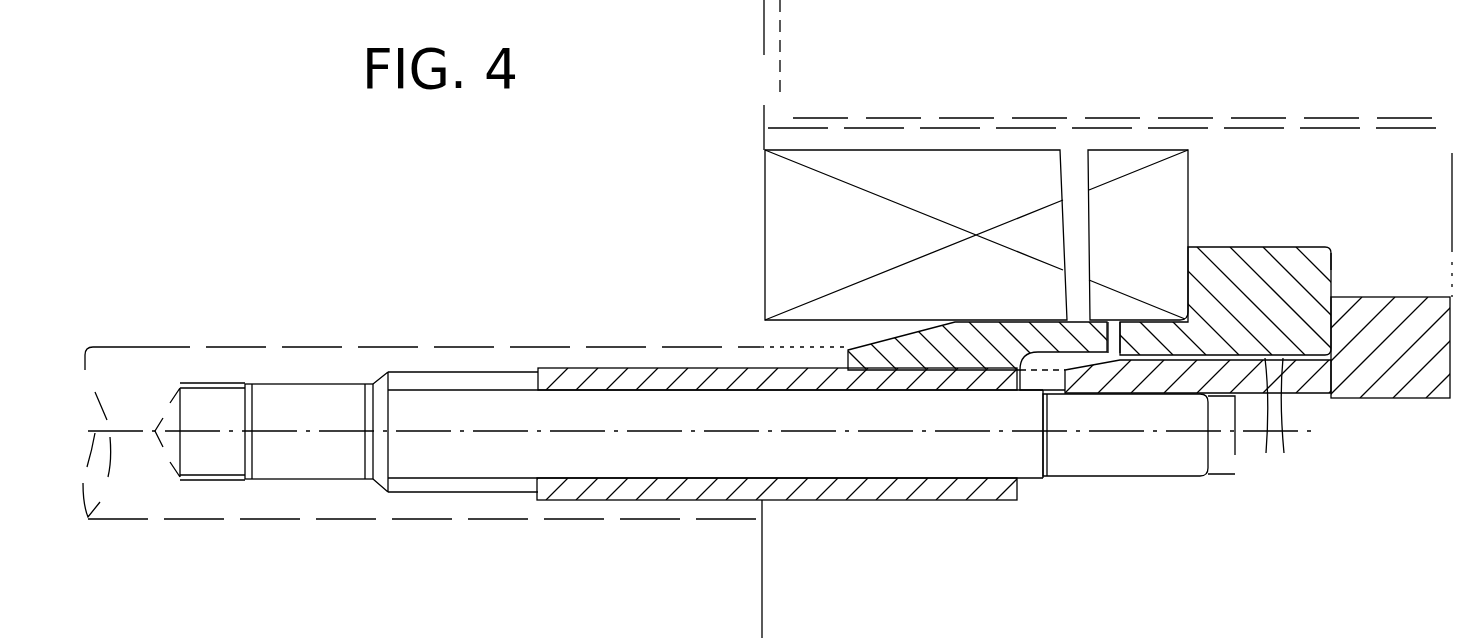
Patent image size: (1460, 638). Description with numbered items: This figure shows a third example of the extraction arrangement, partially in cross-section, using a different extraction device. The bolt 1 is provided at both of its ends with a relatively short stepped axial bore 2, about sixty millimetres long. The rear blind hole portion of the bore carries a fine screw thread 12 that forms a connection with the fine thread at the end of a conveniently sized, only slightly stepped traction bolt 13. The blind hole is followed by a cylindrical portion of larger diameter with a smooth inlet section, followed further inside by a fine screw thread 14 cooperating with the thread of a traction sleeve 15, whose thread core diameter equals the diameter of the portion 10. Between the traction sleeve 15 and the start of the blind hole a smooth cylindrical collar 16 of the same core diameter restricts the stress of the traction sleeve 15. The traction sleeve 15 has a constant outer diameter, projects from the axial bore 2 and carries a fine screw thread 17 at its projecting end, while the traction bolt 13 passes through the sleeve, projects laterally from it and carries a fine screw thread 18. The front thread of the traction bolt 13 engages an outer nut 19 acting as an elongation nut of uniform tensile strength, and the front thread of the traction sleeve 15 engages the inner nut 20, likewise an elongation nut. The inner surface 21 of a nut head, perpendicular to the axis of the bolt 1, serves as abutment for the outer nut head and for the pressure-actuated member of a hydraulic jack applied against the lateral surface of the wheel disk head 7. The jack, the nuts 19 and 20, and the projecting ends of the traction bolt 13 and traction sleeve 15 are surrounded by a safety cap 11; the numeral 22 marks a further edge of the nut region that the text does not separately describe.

The bolt 1 is at (369, 341).
The stepped axial bore 2 is at (235, 432).
The wheel disk head 7 is at (767, 133).
The portion 10 is at (742, 368).
The safety cap 11 is at (1331, 127).
The fine screw thread 12 is at (303, 383).
The traction bolt 13 is at (480, 470).
The fine screw thread 14 is at (613, 367).
The traction sleeve 15 is at (765, 504).
The smooth cylindrical collar 16 is at (420, 496).
The fine screw thread 17 is at (922, 502).
The fine screw thread 18 is at (1113, 481).
The outer nut 19 is at (1341, 251).
The inner nut 20 is at (1367, 307).
The inner surface 21 is at (1327, 306).
The corner edge 22 is at (1334, 258).